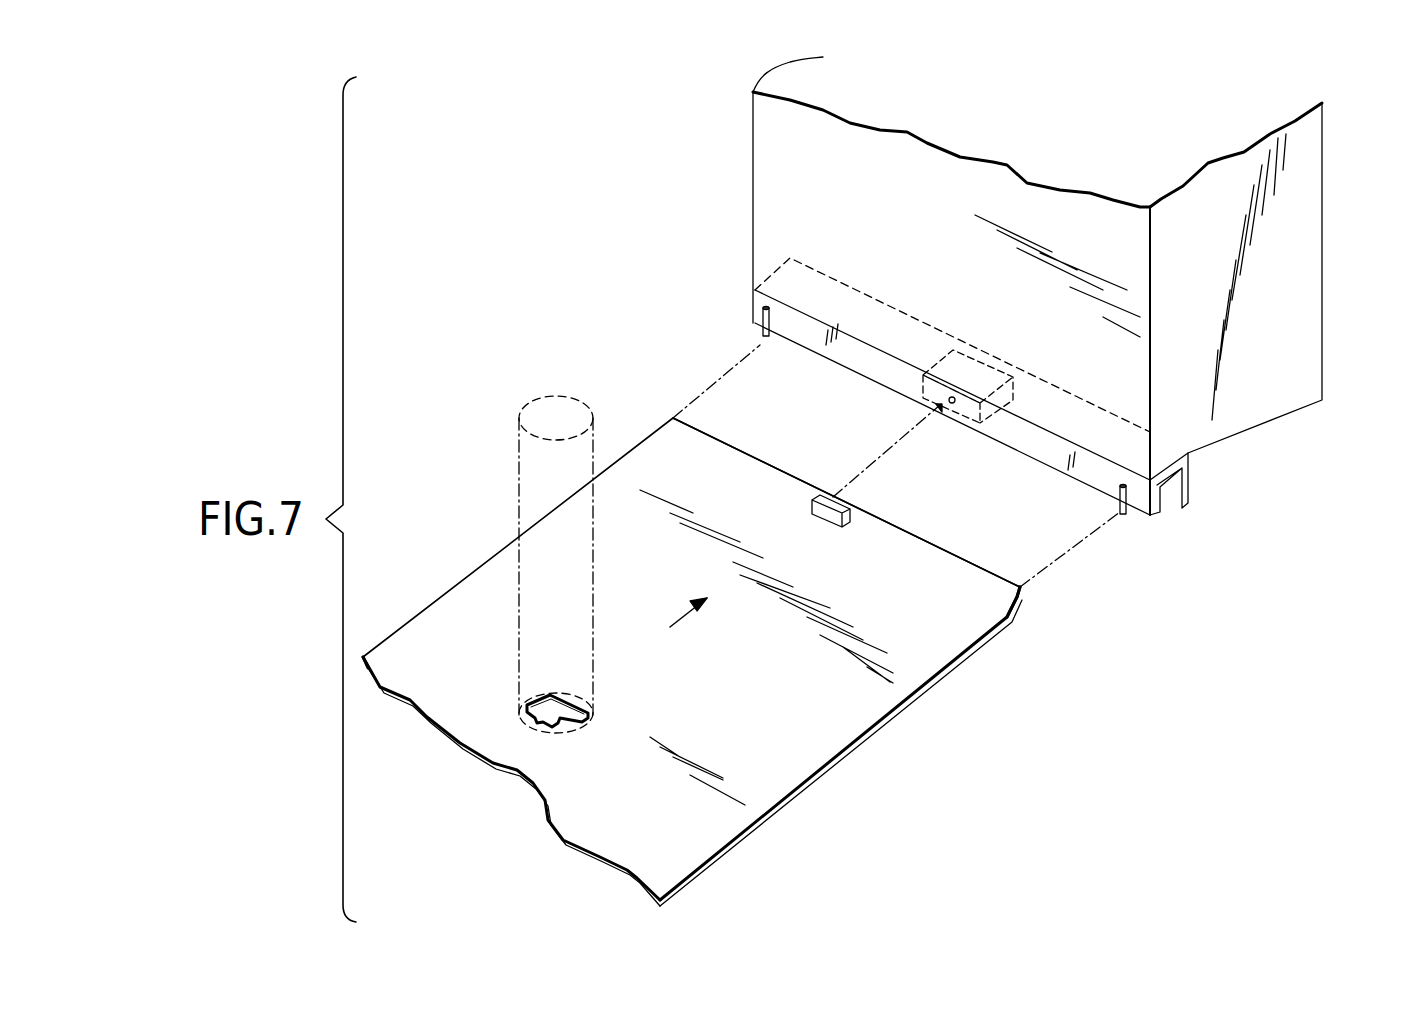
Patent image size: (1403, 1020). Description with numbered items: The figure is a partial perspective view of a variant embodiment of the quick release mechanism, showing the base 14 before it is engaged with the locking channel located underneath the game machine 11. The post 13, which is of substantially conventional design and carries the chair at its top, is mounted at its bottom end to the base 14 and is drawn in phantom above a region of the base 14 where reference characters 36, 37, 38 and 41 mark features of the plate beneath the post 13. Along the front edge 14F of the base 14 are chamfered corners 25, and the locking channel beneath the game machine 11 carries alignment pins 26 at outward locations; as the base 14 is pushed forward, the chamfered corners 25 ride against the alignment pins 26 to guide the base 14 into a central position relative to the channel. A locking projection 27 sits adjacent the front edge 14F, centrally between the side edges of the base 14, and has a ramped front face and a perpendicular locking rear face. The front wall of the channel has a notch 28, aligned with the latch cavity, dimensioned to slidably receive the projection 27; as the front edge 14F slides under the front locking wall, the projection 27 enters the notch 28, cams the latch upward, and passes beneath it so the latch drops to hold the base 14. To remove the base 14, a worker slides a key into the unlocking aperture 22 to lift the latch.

The game machine 11 is at (1313, 312).
The post 13 is at (528, 462).
The base 14 is at (867, 715).
The front edge 14F is at (717, 433).
The unlocking aperture 22 is at (950, 397).
The chamfered corners 25 is at (660, 420).
The alignment pins 26 is at (765, 335).
The locking projection 27 is at (812, 510).
The notch 28 is at (948, 413).
The slot 36 is at (543, 730).
The post hole 37 is at (574, 707).
The slot edge 38 is at (563, 730).
The tab 41 is at (583, 725).